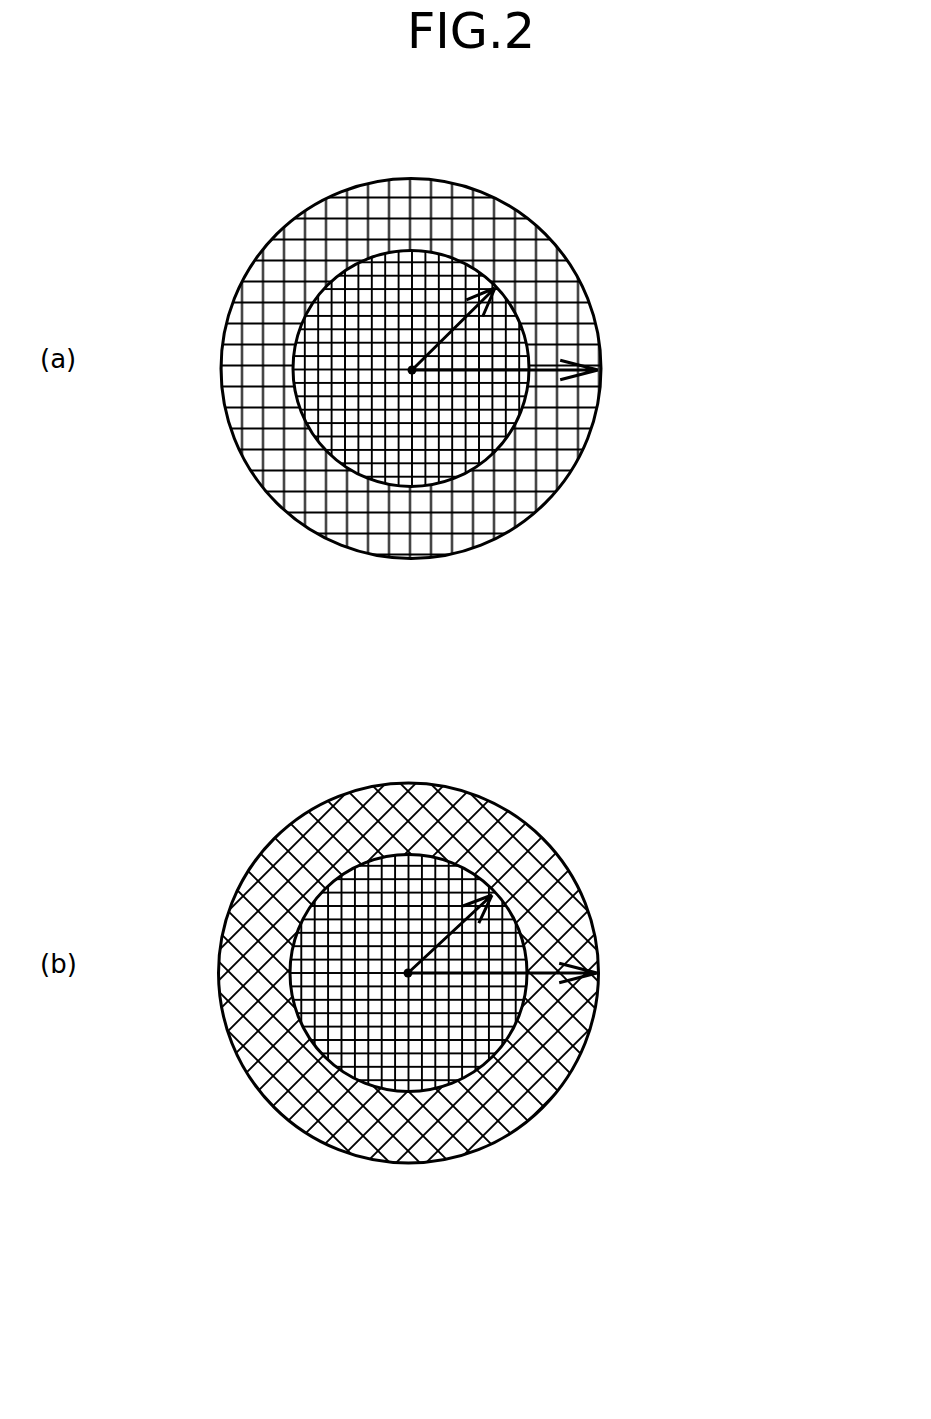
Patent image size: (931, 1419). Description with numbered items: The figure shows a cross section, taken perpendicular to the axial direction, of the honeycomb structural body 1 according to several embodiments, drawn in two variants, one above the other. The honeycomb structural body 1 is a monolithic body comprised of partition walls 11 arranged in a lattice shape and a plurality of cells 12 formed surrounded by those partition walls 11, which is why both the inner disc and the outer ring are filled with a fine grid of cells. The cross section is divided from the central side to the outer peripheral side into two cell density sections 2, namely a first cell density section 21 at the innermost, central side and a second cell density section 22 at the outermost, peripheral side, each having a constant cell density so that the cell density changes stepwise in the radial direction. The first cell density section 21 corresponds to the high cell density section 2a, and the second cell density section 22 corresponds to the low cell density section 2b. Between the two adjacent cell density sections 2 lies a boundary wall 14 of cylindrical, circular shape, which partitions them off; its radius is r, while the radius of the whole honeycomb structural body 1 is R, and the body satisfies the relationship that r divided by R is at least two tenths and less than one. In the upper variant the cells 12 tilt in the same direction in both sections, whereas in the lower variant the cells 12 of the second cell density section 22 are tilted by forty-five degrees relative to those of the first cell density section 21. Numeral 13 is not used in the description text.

The honeycomb structural body 1 is at (592, 188).
The cell density section 2 is at (416, 682).
The high cell density section 2a is at (501, 682).
The low cell density section 2b is at (416, 700).
The partition wall 11 is at (380, 240).
The cell 12 is at (297, 275).
The outer periphery of conductor 13 is at (575, 272).
The boundary wall 14 is at (463, 477).
The first cell density section 21 is at (409, 682).
The second cell density section 22 is at (360, 700).
The radius of the honeycomb structural body R is at (545, 370).
The radius of the boundary wall r is at (447, 330).